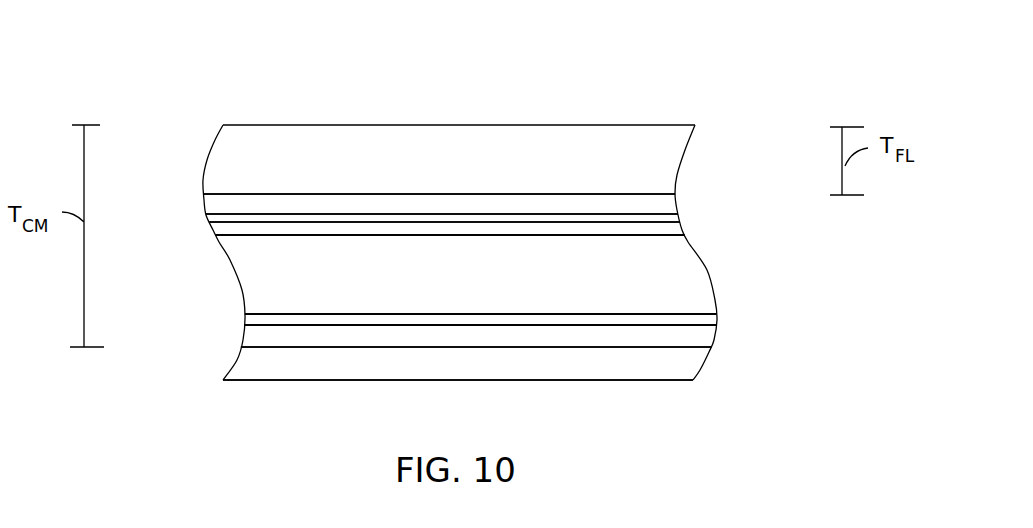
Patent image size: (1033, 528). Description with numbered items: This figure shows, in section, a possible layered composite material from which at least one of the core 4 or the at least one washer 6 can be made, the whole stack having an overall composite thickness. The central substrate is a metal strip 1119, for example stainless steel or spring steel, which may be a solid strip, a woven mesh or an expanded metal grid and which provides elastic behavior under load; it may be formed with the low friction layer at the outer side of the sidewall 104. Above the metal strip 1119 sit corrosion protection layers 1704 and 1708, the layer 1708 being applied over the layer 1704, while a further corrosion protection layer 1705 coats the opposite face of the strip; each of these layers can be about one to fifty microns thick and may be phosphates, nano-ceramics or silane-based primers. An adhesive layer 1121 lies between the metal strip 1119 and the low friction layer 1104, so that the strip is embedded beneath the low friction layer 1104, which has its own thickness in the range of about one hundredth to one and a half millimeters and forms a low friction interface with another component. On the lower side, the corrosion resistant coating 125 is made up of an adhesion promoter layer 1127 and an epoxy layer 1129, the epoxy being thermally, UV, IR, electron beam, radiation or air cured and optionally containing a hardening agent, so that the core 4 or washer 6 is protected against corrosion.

The low friction layer 1104 is at (203, 163).
The adhesive layer 1121 is at (203, 207).
The corrosion protection layer 1708 is at (678, 220).
The corrosion protection layer 1704 is at (682, 230).
The metal strip 1119 is at (227, 262).
The sidewall 104 is at (713, 290).
The corrosion protection layer 1705 is at (718, 320).
The adhesion promoter layer 1127 is at (243, 337).
The epoxy layer 1129 is at (228, 370).
The corrosion resistant coating 125 is at (725, 326).
The core 4 is at (763, 33).
The washer 6 is at (730, 46).